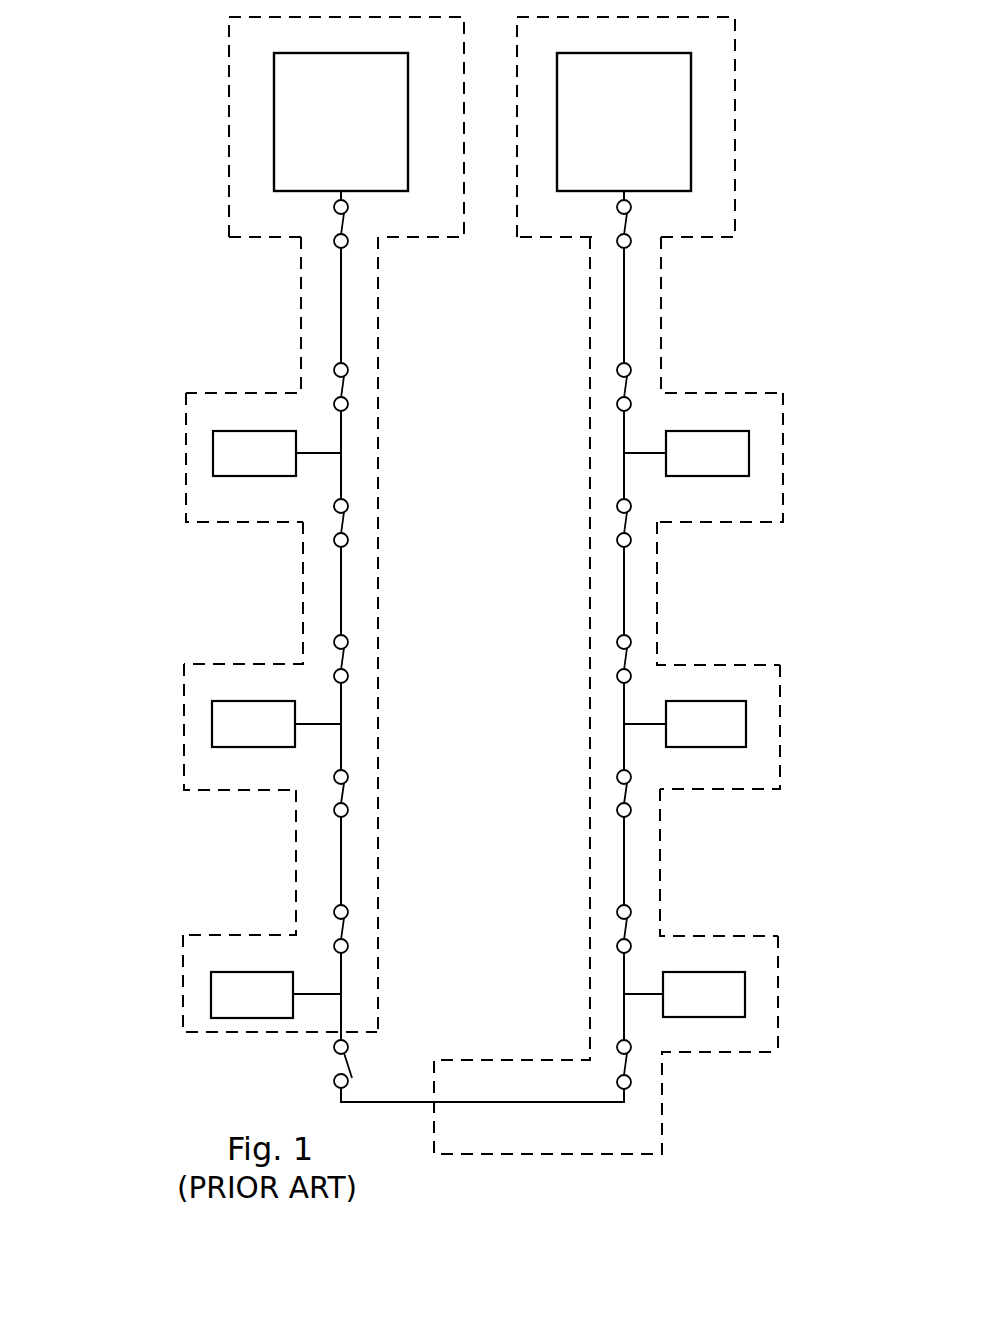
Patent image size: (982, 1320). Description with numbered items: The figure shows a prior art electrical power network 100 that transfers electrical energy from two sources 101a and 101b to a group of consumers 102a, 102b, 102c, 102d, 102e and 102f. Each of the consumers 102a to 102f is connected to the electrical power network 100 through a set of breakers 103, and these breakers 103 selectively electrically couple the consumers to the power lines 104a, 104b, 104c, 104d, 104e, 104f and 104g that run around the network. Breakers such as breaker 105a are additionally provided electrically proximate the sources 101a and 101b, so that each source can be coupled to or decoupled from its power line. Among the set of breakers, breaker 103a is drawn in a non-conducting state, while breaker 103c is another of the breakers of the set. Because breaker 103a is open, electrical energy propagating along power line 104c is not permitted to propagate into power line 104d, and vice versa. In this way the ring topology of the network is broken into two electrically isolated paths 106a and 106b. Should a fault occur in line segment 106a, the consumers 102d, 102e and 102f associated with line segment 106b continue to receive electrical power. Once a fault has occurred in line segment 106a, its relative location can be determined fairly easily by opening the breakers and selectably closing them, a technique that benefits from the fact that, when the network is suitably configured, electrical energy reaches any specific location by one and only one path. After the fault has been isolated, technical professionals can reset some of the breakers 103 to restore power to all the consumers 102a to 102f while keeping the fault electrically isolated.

The electrical power network 100 is at (120, 75).
The source 101a is at (274, 103).
The source 101b is at (735, 103).
The consumer 102a is at (213, 447).
The consumer 102b is at (212, 725).
The consumer 102c is at (211, 993).
The consumer 102d is at (745, 990).
The consumer 102e is at (746, 717).
The consumer 102f is at (749, 438).
The breakers 103 is at (790, 500).
The breaker 103a is at (170, 488).
The breaker 103c is at (173, 1040).
The power line 104a is at (341, 313).
The power line 104b is at (341, 582).
The power line 104c is at (341, 860).
The power line 104d is at (530, 1102).
The power line 104e is at (660, 847).
The power line 104f is at (657, 590).
The power line 104g is at (661, 313).
The breaker 105a is at (212, 188).
The electrically isolated path 106a is at (378, 493).
The electrically isolated path 106b is at (590, 790).